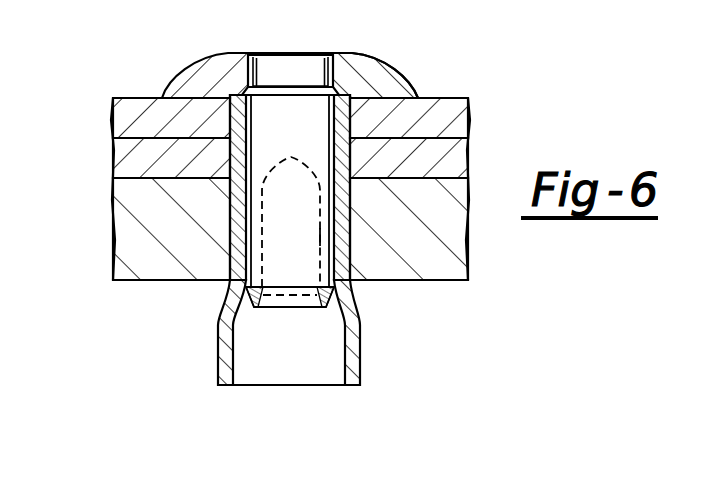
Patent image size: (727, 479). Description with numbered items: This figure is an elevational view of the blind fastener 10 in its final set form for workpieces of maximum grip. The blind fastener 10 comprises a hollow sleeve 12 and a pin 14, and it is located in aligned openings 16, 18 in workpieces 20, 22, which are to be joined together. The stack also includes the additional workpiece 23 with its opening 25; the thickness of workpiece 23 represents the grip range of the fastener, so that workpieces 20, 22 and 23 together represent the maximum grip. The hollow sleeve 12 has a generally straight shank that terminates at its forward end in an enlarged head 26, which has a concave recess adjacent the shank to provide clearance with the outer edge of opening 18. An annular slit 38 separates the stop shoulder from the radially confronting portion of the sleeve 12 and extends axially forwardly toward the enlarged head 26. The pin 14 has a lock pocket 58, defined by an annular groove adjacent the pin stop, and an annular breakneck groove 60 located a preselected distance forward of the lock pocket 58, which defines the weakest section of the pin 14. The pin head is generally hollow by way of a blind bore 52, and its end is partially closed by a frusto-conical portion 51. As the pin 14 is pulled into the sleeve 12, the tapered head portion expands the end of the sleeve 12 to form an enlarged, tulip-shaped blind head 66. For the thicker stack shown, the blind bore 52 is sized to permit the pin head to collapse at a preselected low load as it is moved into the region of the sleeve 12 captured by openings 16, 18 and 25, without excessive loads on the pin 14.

The blind fastener 10 is at (378, 342).
The hollow sleeve 12 is at (348, 257).
The pin 14 is at (322, 163).
The opening 16 is at (226, 152).
The opening 18 is at (222, 115).
The workpiece 20 is at (119, 152).
The workpiece 22 is at (119, 106).
The workpiece 23 is at (143, 277).
The opening 25 is at (230, 194).
The enlarged head 26 is at (388, 73).
The annular slit 38 is at (222, 80).
The frusto-conical portion 51 is at (337, 305).
The blind bore 52 is at (318, 231).
The lock pocket 58 is at (334, 55).
The breakneck groove 60 is at (303, 55).
The blind head 66 is at (218, 322).